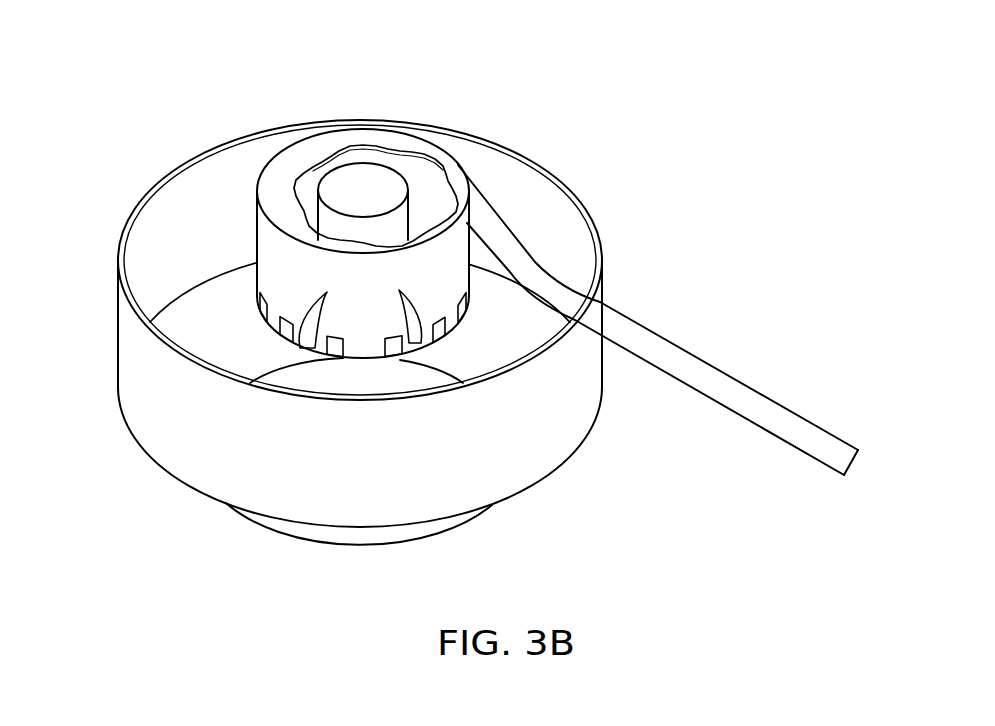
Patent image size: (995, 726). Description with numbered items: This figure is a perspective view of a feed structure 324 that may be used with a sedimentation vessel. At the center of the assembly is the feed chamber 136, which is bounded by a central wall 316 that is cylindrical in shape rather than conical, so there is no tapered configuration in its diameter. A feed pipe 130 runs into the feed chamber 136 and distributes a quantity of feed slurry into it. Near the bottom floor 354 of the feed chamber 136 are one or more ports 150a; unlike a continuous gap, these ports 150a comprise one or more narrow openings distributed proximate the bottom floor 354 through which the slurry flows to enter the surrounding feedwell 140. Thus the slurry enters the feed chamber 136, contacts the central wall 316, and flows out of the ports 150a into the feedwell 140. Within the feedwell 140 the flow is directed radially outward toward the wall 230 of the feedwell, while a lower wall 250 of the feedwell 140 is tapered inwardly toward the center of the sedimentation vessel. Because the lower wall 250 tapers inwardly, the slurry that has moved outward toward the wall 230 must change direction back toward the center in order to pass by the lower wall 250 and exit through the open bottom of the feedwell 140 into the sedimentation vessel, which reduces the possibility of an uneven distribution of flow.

The feed pipe 130 is at (440, 190).
The feed chamber 136 is at (413, 172).
The feedwell 140 is at (572, 285).
The ports 150a is at (447, 314).
The wall of the feedwell 230 is at (545, 428).
The lower wall of the feedwell 250 is at (397, 537).
The central wall 316 is at (340, 230).
The feed structure 324 is at (567, 160).
The bottom floor 354 is at (405, 352).